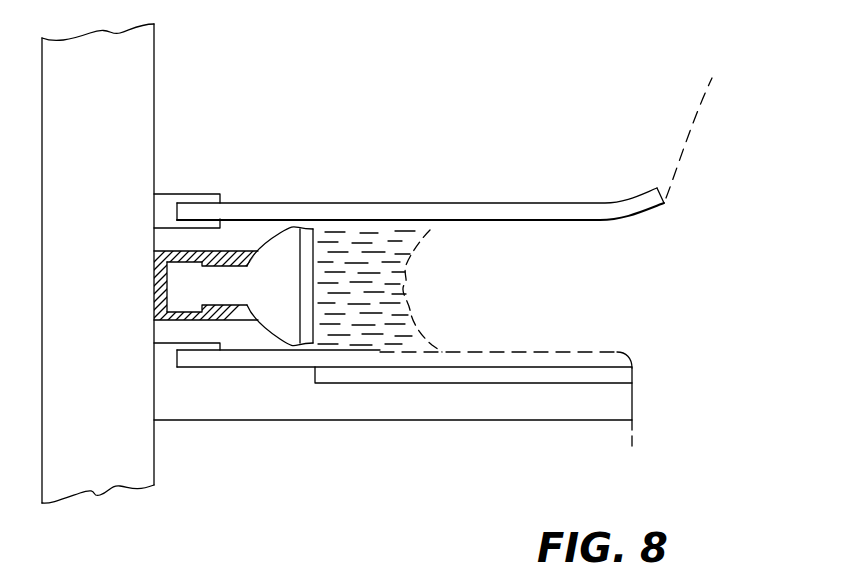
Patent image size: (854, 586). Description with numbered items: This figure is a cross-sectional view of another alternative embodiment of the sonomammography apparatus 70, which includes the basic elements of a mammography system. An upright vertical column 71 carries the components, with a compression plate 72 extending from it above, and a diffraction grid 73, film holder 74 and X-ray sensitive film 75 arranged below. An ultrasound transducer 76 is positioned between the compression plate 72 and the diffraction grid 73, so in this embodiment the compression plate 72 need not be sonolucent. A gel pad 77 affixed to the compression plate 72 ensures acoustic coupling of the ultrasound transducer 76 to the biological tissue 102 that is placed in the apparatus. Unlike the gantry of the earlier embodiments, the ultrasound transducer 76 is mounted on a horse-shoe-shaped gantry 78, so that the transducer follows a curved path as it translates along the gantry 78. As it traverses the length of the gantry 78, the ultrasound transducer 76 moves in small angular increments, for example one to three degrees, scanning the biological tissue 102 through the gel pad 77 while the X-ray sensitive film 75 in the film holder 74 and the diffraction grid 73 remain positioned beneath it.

The sonomammography apparatus 70 is at (414, 81).
The upright vertical column 71 is at (104, 217).
The compression plate 72 is at (532, 213).
The diffraction grid 73 is at (603, 362).
The film holder 74 is at (448, 414).
The X-ray sensitive film 75 is at (618, 377).
The ultrasound transducer 76 is at (285, 245).
The gel pad 77 is at (347, 240).
The horse-shoe-shaped gantry 78 is at (157, 286).
The biological tissue 102 is at (511, 298).